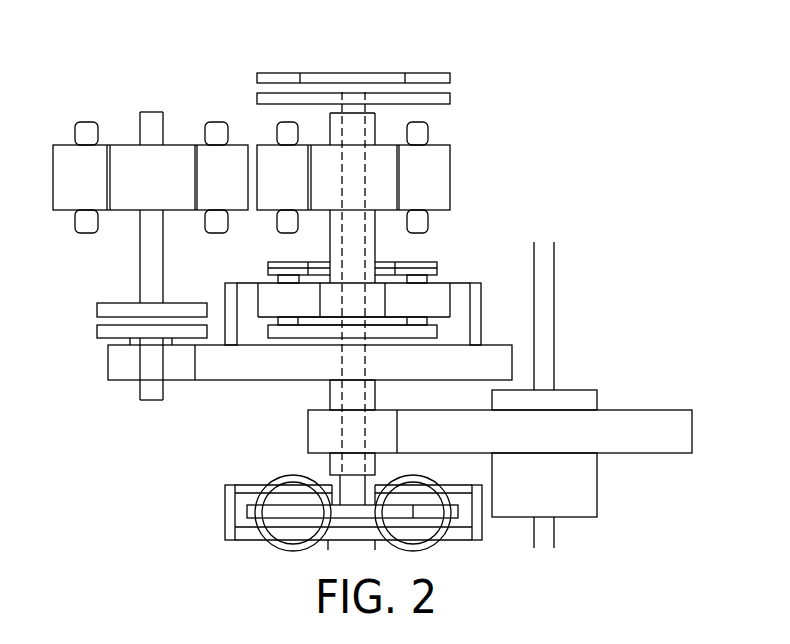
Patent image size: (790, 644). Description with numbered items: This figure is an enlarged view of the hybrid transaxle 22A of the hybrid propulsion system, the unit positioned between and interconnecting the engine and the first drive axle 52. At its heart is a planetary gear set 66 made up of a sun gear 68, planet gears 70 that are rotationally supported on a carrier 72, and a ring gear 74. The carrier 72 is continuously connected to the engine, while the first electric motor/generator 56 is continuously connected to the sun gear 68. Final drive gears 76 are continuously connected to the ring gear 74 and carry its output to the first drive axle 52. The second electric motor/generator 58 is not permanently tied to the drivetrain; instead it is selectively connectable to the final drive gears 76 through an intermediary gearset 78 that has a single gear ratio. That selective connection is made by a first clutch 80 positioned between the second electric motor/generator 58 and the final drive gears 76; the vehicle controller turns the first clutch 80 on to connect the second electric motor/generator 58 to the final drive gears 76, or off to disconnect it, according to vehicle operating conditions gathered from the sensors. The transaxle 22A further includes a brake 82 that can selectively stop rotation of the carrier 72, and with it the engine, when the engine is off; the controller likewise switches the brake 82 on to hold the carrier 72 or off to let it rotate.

The hybrid transaxle 22A is at (165, 459).
The first drive axle 52 is at (545, 260).
The first electric motor/generator 56 is at (377, 162).
The second electric motor/generator 58 is at (131, 165).
The planetary gear set 66 is at (484, 300).
The sun gear 68 is at (420, 268).
The planet gears 70 is at (273, 293).
The carrier 72 is at (277, 268).
The ring gear 74 is at (477, 325).
The final drive gears 76 is at (397, 433).
The intermediary gearset 78 is at (198, 362).
The first clutch 80 is at (152, 322).
The brake 82 is at (353, 100).